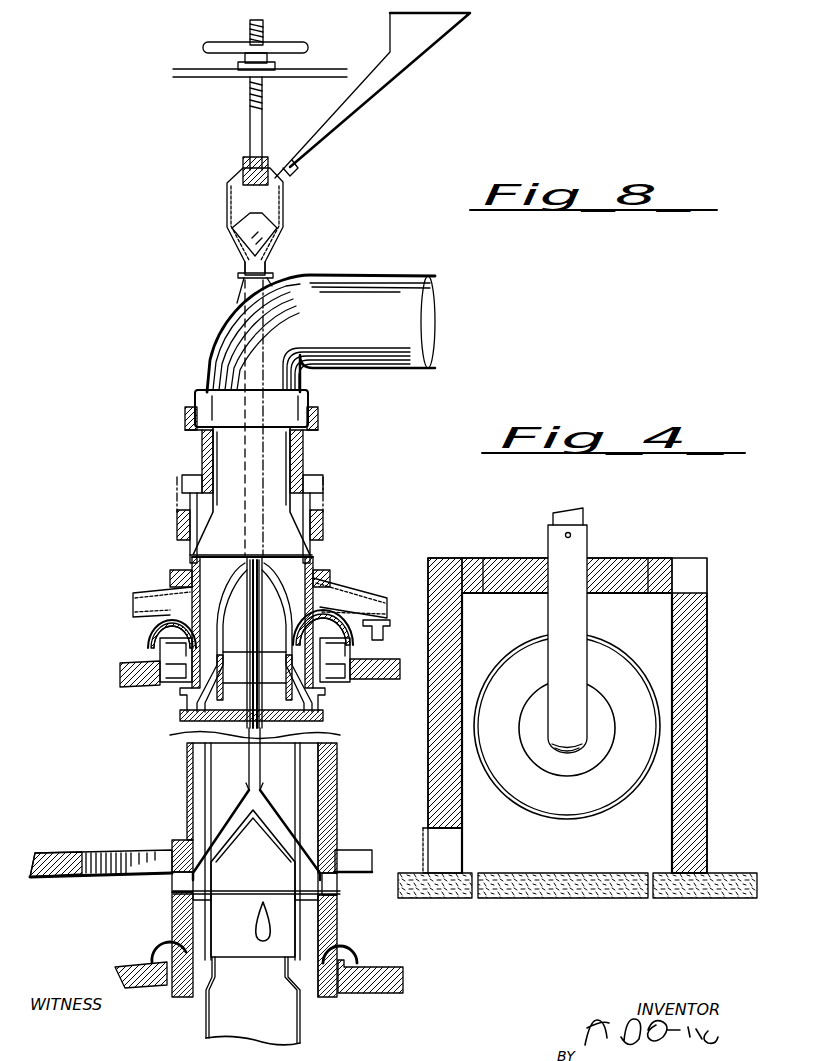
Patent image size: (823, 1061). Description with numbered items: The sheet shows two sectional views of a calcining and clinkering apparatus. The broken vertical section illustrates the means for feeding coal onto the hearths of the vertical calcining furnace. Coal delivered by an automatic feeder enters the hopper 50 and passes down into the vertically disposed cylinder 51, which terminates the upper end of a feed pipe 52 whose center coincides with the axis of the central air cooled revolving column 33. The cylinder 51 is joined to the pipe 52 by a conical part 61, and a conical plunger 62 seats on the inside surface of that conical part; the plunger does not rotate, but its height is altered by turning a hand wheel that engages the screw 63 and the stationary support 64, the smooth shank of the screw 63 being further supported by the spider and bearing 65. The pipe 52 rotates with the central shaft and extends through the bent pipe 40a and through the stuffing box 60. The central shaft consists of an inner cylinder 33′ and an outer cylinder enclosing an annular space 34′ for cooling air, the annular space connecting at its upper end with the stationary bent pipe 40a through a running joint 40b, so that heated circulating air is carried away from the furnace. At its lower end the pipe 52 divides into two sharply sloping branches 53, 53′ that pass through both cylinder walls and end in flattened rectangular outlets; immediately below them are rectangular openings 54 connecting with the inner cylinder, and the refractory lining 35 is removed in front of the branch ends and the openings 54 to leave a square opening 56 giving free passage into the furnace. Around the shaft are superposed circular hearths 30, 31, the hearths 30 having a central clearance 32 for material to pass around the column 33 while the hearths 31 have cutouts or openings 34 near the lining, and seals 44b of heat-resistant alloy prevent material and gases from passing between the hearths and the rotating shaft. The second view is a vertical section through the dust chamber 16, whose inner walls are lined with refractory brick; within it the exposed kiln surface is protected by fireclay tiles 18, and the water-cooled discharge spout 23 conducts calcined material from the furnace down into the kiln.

In FIG. 8, the conical plunger 62 is at (262, 46).
In FIG. 8, the stationary support 64 is at (283, 63).
In FIG. 8, the screw 63 is at (249, 90).
In FIG. 8, the spider and bearing 65 is at (242, 165).
In FIG. 8, the vertically disposed cylinder 51 is at (270, 202).
In FIG. 8, the conical part 61 is at (244, 256).
In FIG. 8, the stuffing box 60 is at (280, 278).
In FIG. 8, the hopper 50 is at (410, 50).
In FIG. 8, the bent pipe 40a is at (432, 343).
In FIG. 8, the running joint 40b is at (298, 453).
In FIG. 8, the feed pipe 52 is at (203, 357).
In FIG. 8, the seal 44b is at (158, 640).
In FIG. 8, the hearth 31 is at (118, 680).
In FIG. 8, the annular space 34′ is at (203, 778).
In FIG. 8, the inner cylinder 33′ is at (297, 793).
In FIG. 8, the branch 53 is at (228, 815).
In FIG. 8, the branch 53′ is at (280, 813).
In FIG. 8, the central air cooled revolving column 33 is at (253, 883).
In FIG. 8, the cutouts or openings 34 is at (312, 833).
In FIG. 8, the hearth 30 is at (58, 838).
In FIG. 8, the clearance 32 is at (120, 853).
In FIG. 8, the square opening 56 is at (172, 882).
In FIG. 8, the rectangular openings 54 is at (288, 892).
In FIG. 8, the refractory lining 35 is at (255, 927).
In FIG. 4, the dust chamber 16 is at (658, 660).
In FIG. 4, the fireclay tiles 18 is at (542, 800).
In FIG. 4, the water-cooled discharge spout 23 is at (567, 567).